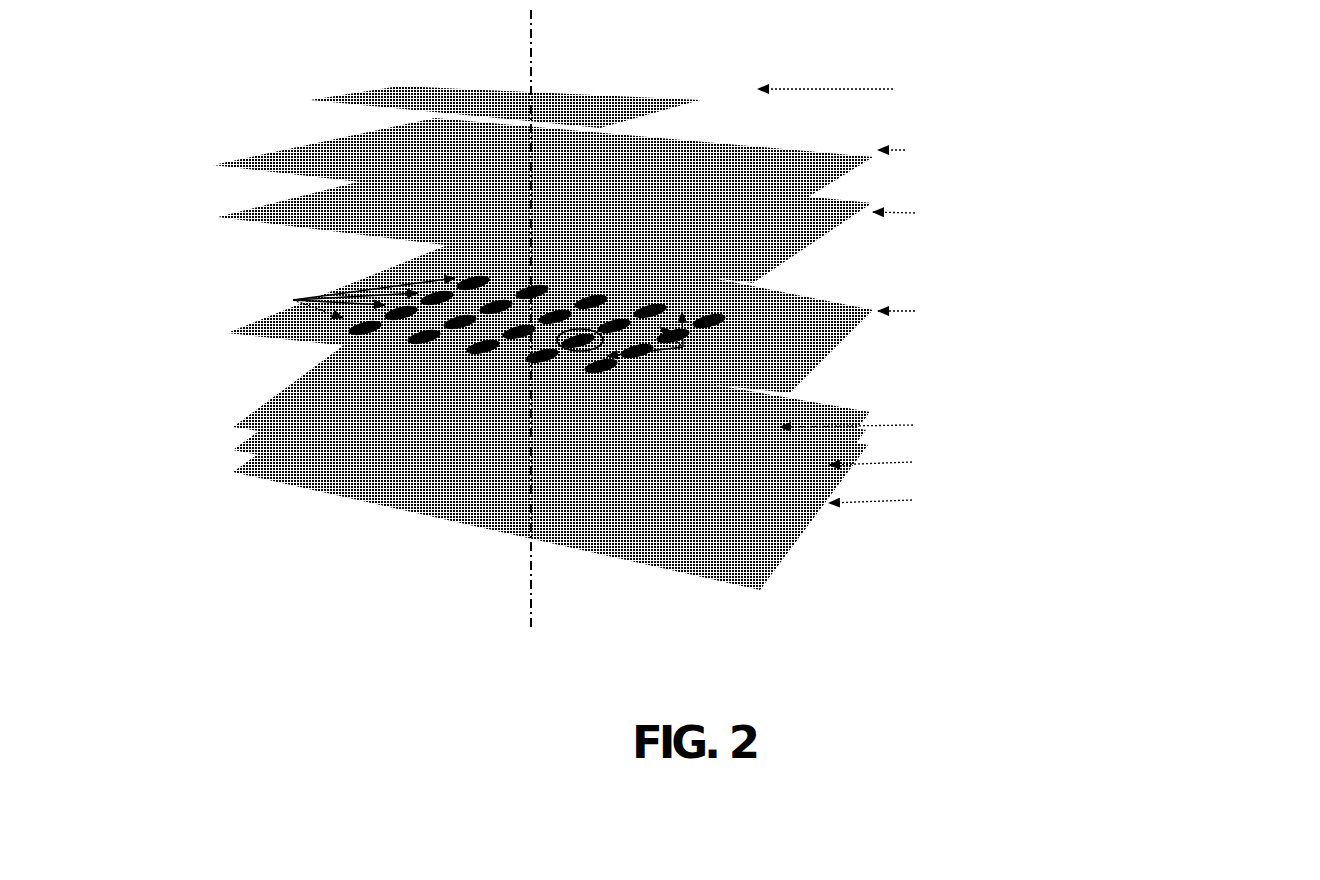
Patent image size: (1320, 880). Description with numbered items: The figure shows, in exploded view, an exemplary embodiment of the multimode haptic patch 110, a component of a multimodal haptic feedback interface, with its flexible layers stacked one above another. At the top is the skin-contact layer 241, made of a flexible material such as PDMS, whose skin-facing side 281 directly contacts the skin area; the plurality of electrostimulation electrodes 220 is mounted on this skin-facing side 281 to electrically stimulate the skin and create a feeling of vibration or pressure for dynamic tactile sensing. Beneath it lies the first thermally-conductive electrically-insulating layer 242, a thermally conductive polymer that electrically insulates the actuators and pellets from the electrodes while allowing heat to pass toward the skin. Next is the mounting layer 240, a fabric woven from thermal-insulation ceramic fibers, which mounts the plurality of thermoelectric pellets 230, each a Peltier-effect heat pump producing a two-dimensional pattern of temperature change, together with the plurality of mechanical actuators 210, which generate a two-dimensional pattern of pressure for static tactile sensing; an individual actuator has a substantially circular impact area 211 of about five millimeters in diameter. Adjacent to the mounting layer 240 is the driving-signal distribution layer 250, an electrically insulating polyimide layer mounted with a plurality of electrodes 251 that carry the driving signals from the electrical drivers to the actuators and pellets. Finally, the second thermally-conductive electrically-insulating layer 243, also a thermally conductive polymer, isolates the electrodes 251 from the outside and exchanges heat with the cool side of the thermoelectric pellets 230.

The multimode haptic patch 110 is at (701, 340).
The mechanical actuators 210 is at (755, 362).
The impact area 211 is at (581, 351).
The electrostimulation electrodes 220 is at (378, 102).
The thermoelectric pellets 230 is at (208, 294).
The mounting layer 240 is at (833, 328).
The skin-contact layer 241 is at (310, 160).
The first thermally-conductive electrically-insulating layer 242 is at (280, 218).
The second thermally-conductive electrically-insulating layer 243 is at (280, 464).
The driving-signal distribution layer 250 is at (280, 418).
The electrodes 251 is at (723, 448).
The skin-facing side 281 is at (735, 163).